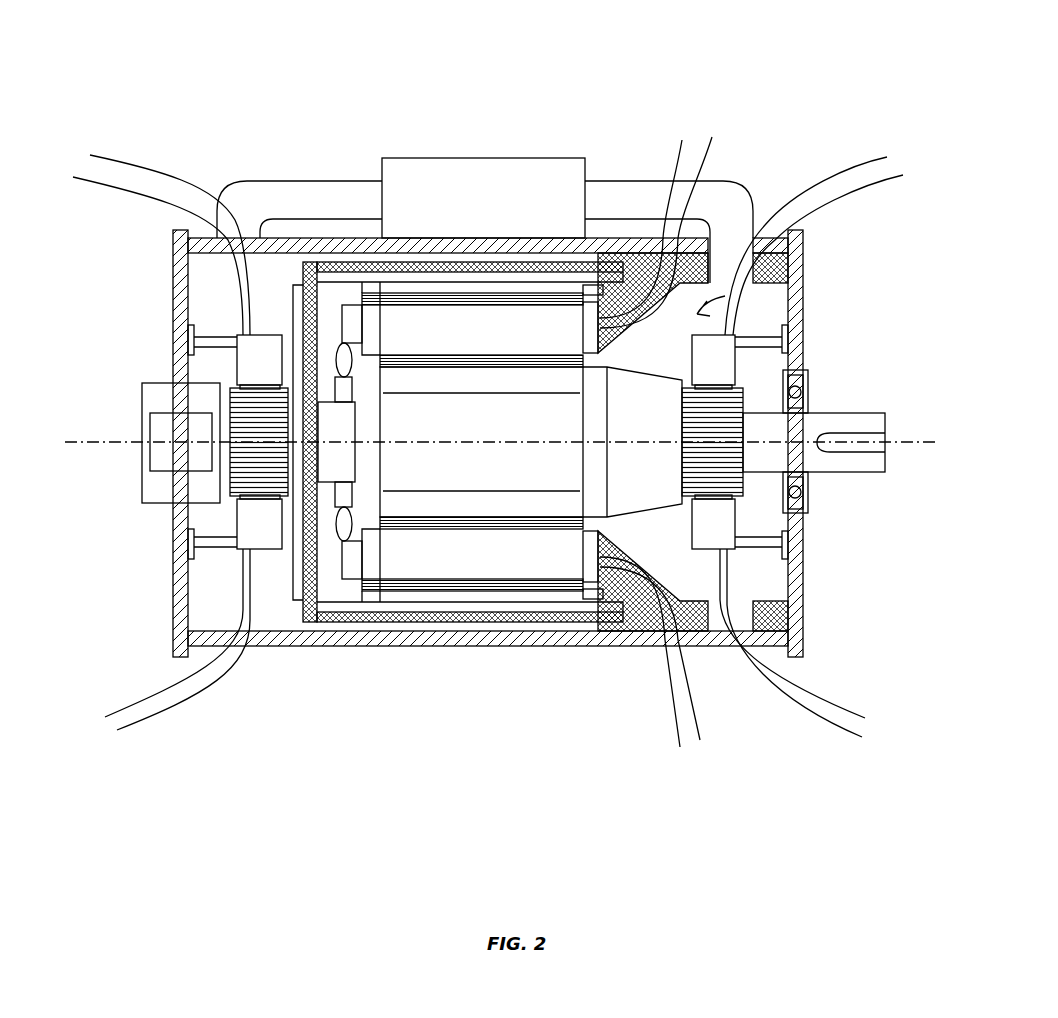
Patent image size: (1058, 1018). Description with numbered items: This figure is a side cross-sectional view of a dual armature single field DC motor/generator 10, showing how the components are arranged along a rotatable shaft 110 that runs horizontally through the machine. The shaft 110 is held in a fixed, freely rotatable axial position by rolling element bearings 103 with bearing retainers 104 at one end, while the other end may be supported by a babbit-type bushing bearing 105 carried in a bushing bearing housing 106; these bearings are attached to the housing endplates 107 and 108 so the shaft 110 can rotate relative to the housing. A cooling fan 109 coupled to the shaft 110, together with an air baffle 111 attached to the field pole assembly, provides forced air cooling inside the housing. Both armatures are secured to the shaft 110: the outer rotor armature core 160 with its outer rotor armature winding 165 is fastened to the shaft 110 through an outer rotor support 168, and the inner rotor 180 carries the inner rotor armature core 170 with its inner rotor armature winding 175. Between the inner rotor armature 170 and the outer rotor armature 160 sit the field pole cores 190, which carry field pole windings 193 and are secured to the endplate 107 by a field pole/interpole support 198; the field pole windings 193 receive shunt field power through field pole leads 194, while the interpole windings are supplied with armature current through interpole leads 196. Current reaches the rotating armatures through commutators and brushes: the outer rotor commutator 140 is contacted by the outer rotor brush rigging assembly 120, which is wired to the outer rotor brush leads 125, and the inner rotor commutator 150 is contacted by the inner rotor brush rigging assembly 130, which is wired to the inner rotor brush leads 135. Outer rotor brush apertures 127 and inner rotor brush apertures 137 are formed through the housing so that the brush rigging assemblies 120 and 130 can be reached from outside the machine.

The motor assembly 10 is at (415, 175).
The rolling element bearing 103 is at (808, 498).
The bearing retainer 104 is at (810, 403).
The bushing bearing 105 is at (153, 470).
The bushing bearing housing 106 is at (168, 486).
The housing endplate 107 is at (803, 333).
The housing endplate 108 is at (188, 340).
The cooling fan 109 is at (342, 532).
The rotatable shaft 110 is at (883, 424).
The air baffle 111 is at (225, 240).
The outer rotor brush rigging assembly 120 is at (250, 520).
The outer rotor brush leads 125 is at (135, 710).
The outer rotor brush aperture 127 is at (175, 575).
The inner rotor brush rigging assembly 130 is at (743, 498).
The inner rotor brush leads 135 is at (840, 712).
The inner rotor brush aperture 137 is at (805, 597).
The outer rotor commutator 140 is at (237, 408).
The inner rotor commutator 150 is at (785, 528).
The outer rotor armature core 160 is at (450, 600).
The outer rotor armature winding 165 is at (478, 590).
The outer rotor support 168 is at (307, 550).
The inner rotor armature core 170 is at (485, 520).
The inner rotor armature winding 175 is at (505, 527).
The inner rotor 180 is at (467, 473).
The field pole core 190 is at (418, 612).
The field pole winding 193 is at (545, 537).
The field pole lead 194 is at (672, 172).
The interpole lead 196 is at (712, 742).
The field pole/interpole support 198 is at (700, 640).